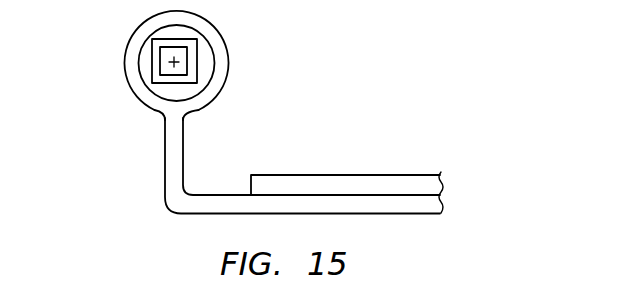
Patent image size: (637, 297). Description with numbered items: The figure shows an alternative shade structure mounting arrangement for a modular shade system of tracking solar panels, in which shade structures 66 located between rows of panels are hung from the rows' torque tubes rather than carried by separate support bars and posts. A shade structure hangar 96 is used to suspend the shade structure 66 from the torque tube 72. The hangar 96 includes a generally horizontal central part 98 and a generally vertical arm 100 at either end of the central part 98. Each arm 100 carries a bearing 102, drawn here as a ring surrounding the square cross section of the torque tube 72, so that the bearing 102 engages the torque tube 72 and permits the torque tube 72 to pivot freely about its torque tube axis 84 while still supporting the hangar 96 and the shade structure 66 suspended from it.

The shade structure 66 is at (385, 172).
The torque tube 72 is at (190, 50).
The torque tube axis 84 is at (163, 50).
The shade structure hangar 96 is at (148, 160).
The central part 98 is at (305, 205).
The arm 100 is at (140, 103).
The bearing 102 is at (208, 71).